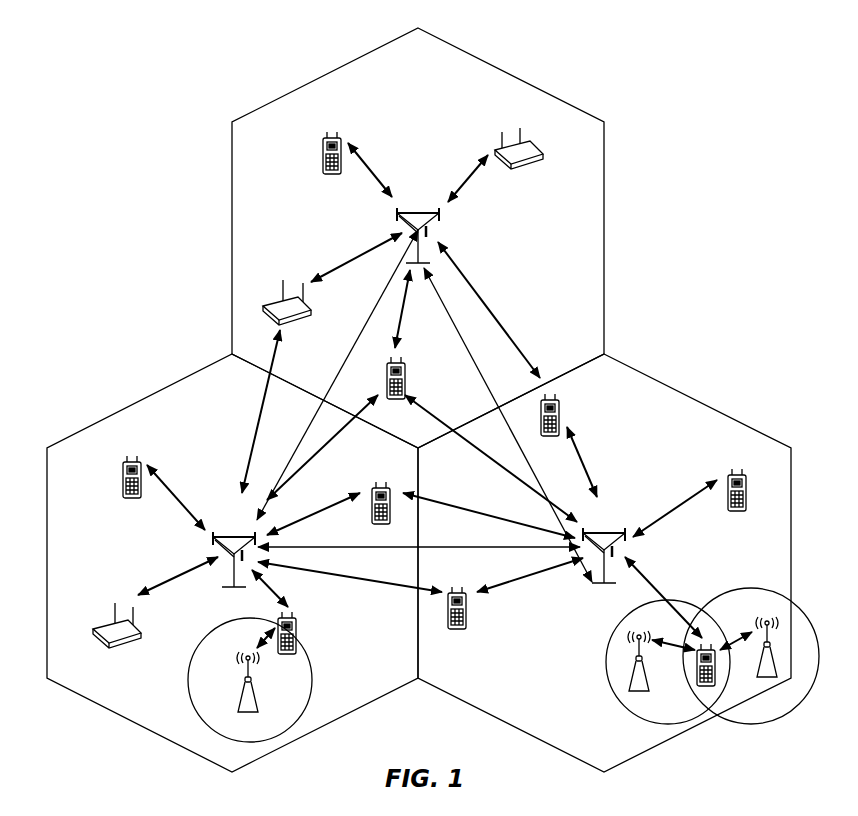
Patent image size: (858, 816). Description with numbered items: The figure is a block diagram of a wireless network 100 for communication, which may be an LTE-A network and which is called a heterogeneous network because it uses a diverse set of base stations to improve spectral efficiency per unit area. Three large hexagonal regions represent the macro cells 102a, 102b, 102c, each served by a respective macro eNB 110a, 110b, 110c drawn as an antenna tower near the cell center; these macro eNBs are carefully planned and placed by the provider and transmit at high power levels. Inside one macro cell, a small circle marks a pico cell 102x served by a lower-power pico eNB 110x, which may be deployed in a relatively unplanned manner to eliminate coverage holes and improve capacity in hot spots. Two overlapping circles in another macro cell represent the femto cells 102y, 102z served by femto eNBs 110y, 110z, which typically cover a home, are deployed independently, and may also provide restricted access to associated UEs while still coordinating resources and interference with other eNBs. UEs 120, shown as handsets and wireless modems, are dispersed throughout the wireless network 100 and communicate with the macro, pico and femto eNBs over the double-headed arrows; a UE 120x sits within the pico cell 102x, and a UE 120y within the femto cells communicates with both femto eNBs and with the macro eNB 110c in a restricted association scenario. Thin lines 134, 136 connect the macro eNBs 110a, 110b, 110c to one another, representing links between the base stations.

The wireless network 100 is at (730, 87).
The macro cell 102a is at (510, 74).
The macro cell 102b is at (140, 400).
The macro cell 102c is at (698, 401).
The pico cell 102x is at (205, 636).
The femto cell 102y is at (614, 631).
The femto cell 102z is at (751, 588).
The macro eNB 110a is at (417, 208).
The macro eNB 110b is at (235, 523).
The macro eNB 110c is at (604, 532).
The pico eNB 110x is at (256, 702).
The femto eNB 110y is at (646, 677).
The femto eNB 110z is at (774, 665).
The UE 120 is at (322, 145).
The user equipment in pico cell 120x is at (308, 623).
The UE 120y is at (697, 686).
The backhaul link between base stations 134 is at (334, 382).
The backhaul link between base stations 136 is at (483, 378).